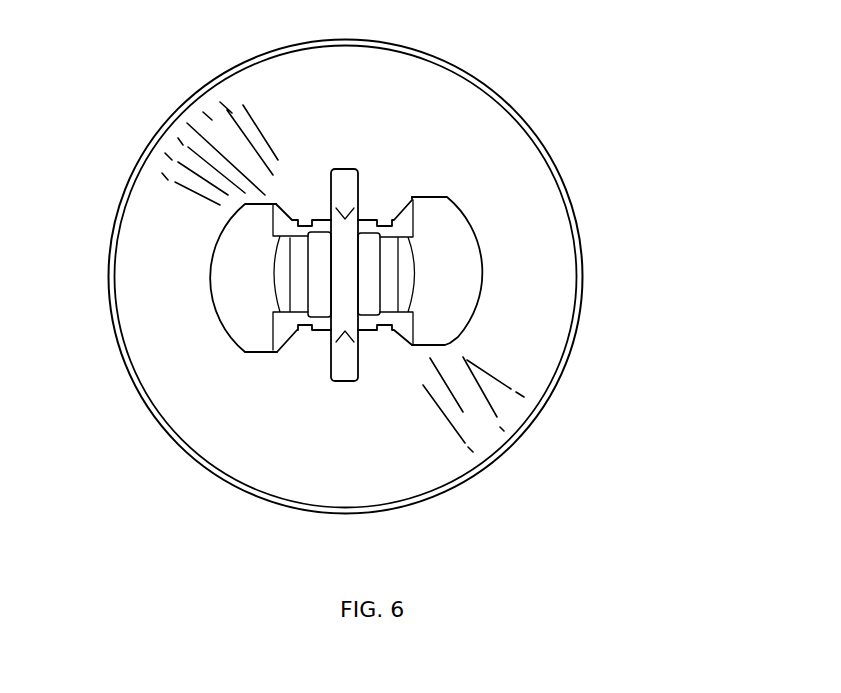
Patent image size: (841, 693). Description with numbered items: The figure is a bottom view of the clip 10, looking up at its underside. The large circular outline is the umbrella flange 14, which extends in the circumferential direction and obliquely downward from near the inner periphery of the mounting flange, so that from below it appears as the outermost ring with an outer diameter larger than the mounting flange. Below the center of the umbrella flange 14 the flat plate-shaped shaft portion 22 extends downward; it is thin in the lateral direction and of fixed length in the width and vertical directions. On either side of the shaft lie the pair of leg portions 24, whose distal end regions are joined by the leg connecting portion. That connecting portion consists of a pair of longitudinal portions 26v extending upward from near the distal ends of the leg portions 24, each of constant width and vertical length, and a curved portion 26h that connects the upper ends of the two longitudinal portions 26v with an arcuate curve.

The clip 10 is at (568, 86).
The umbrella flange 14 is at (572, 193).
The shaft portion 22 is at (362, 355).
The leg portion 24 is at (230, 279).
The curved portion 26h is at (347, 282).
The longitudinal portion 26v is at (321, 292).